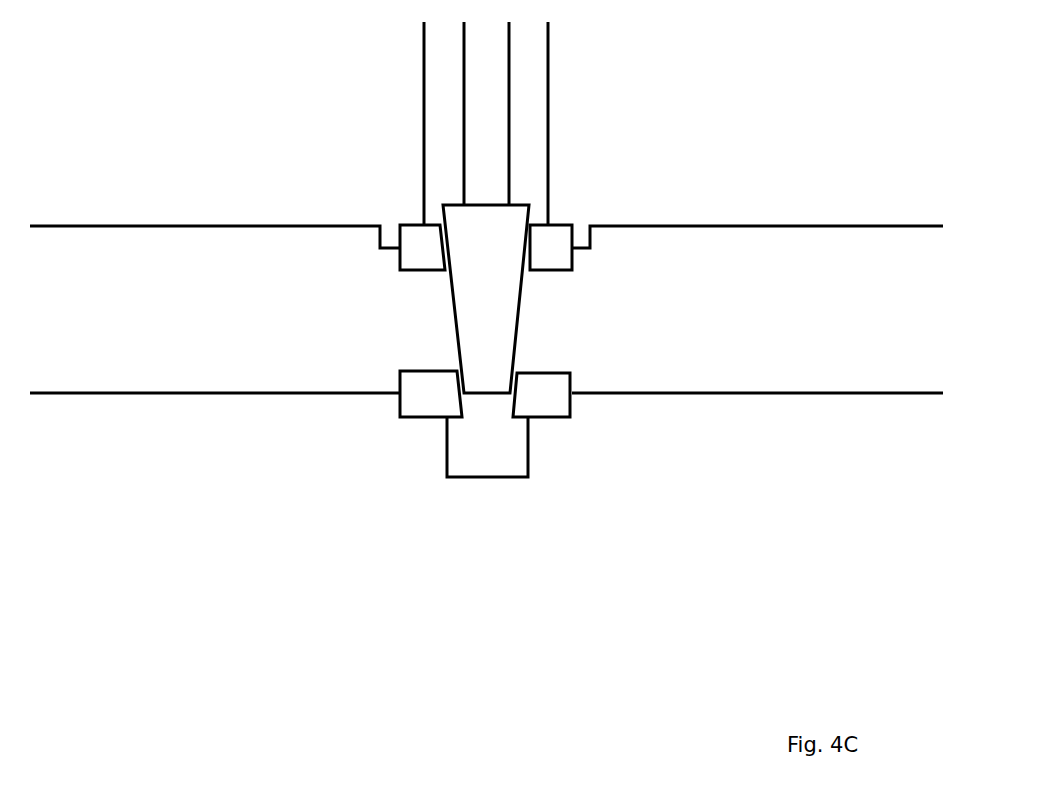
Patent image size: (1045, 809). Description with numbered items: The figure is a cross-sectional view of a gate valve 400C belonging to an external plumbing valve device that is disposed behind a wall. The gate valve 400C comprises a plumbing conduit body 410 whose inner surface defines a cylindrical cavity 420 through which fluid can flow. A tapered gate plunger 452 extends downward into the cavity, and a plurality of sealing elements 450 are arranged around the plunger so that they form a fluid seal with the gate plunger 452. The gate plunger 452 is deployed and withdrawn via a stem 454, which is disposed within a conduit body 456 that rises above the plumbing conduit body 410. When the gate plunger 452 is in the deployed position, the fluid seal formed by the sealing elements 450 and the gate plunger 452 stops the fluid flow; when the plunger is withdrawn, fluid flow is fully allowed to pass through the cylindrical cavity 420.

The plumbing conduit body 410 is at (813, 227).
The cylindrical cavity 420 is at (728, 348).
The sealing elements 450 is at (428, 398).
The gate plunger 452 is at (493, 238).
The stem 454 is at (510, 82).
The conduit body 456 is at (423, 130).
The gate valve 400C is at (203, 672).